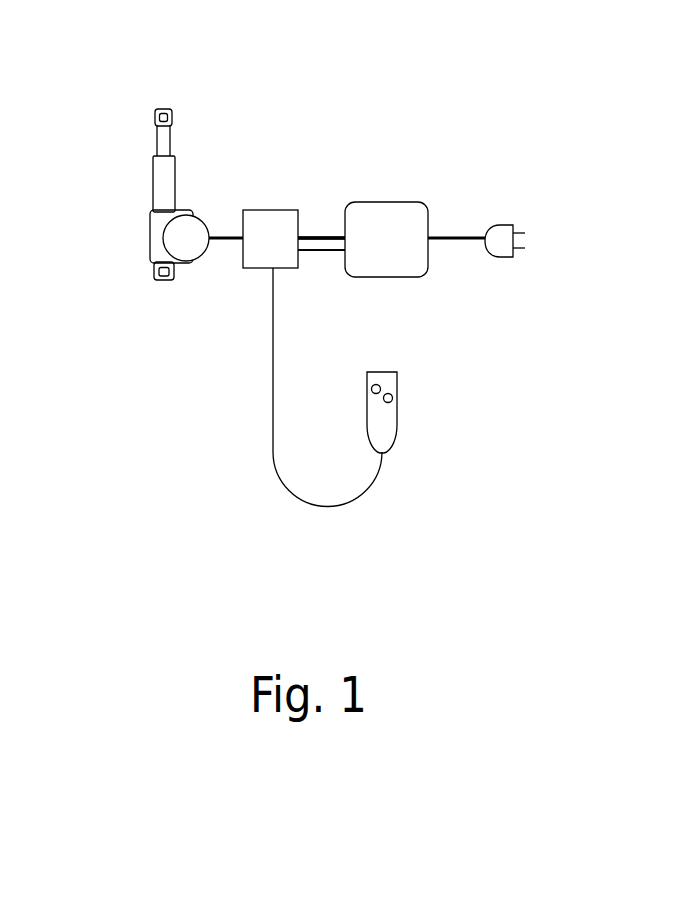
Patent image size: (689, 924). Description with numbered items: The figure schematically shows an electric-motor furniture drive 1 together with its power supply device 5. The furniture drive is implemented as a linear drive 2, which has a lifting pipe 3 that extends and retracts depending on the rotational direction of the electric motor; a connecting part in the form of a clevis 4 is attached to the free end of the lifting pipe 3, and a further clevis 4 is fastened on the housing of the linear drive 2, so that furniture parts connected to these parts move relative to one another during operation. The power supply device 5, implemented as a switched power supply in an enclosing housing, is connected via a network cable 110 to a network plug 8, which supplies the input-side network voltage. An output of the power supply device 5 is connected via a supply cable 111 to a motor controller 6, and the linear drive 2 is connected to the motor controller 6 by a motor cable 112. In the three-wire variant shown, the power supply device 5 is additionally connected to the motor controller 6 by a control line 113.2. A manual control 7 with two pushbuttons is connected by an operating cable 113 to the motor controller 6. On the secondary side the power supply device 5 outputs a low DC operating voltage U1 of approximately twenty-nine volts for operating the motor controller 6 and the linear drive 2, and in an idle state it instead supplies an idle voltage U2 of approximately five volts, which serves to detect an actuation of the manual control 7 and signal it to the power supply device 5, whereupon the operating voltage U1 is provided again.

The electric-motor furniture drive 1 is at (290, 257).
The linear drive 2 is at (151, 183).
The lifting pipe 3 is at (155, 147).
The clevis 4 is at (155, 117).
The power supply device 5 is at (402, 202).
The motor controller 6 is at (262, 210).
The manual control 7 is at (400, 411).
The network plug 8 is at (500, 240).
The network cable 110 is at (447, 240).
The supply cable 111 is at (327, 240).
The motor cable 112 is at (225, 240).
The operating cable 113 is at (272, 363).
The control line 113.2 is at (315, 252).
The operating voltage U1 is at (320, 225).
The idle voltage U2 is at (320, 225).